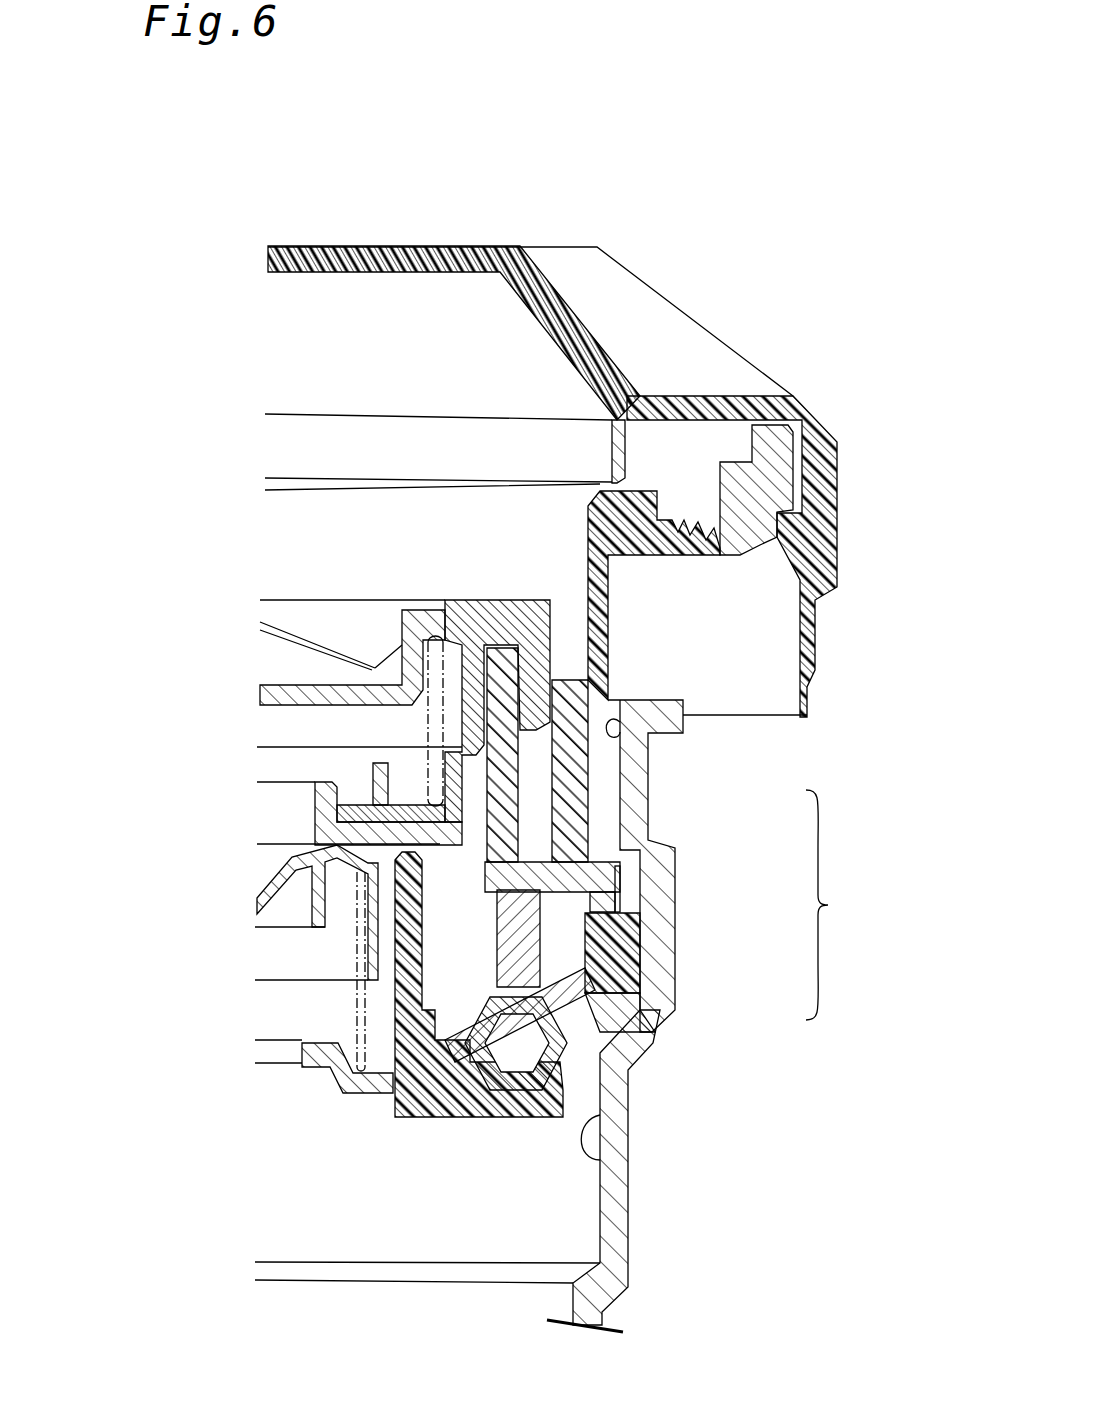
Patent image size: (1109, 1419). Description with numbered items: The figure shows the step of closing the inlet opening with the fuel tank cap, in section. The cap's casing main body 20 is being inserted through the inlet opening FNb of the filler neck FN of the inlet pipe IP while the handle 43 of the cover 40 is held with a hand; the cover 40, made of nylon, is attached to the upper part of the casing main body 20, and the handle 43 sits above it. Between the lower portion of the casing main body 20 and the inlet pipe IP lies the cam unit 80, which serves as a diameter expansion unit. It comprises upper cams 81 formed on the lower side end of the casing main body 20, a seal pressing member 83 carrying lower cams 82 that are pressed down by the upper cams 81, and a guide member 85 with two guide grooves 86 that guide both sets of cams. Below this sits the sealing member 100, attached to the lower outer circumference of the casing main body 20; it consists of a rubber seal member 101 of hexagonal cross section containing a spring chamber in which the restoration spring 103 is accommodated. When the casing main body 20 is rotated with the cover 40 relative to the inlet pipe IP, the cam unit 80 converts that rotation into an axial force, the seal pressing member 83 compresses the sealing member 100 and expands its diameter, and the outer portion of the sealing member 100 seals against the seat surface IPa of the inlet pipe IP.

The handle 43 is at (430, 245).
The cover 40 is at (747, 392).
The casing main body 20 is at (613, 670).
The filler neck FN is at (650, 778).
The inlet opening FNb is at (622, 735).
The cam unit 80 is at (837, 905).
The upper cam 81 is at (623, 870).
The lower cam 82 is at (620, 900).
The guide groove 86 is at (620, 920).
The guide member 85 is at (618, 948).
The seal pressing member 83 is at (618, 988).
The sealing member 100 is at (604, 1010).
The rubber seal member 101 is at (498, 1087).
The restoration spring 103 is at (580, 1085).
The inlet pipe IP is at (615, 1250).
The seat surface IPa is at (620, 1167).